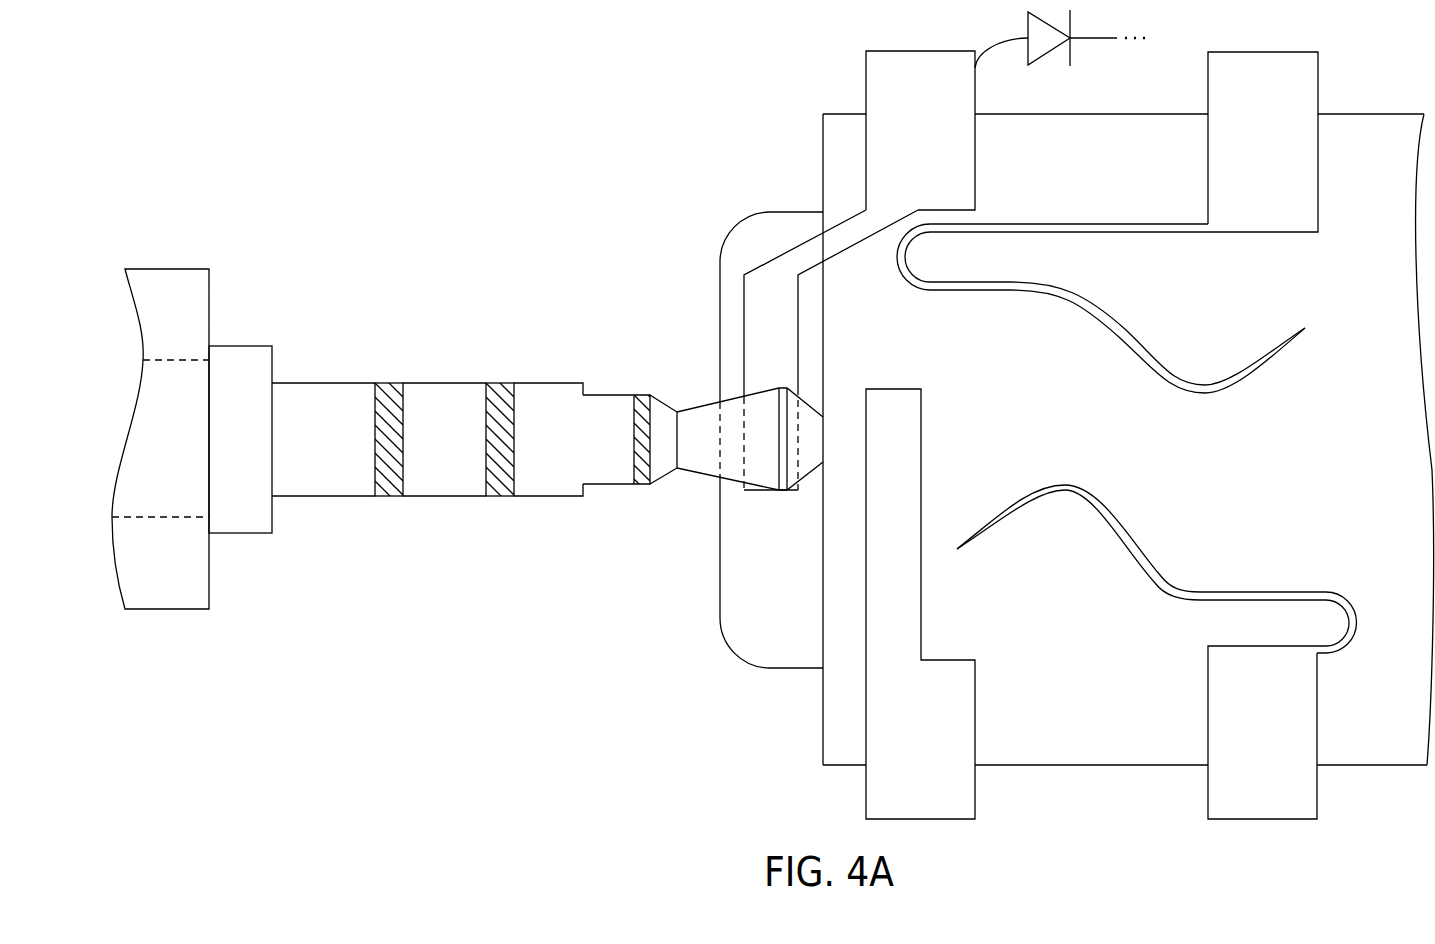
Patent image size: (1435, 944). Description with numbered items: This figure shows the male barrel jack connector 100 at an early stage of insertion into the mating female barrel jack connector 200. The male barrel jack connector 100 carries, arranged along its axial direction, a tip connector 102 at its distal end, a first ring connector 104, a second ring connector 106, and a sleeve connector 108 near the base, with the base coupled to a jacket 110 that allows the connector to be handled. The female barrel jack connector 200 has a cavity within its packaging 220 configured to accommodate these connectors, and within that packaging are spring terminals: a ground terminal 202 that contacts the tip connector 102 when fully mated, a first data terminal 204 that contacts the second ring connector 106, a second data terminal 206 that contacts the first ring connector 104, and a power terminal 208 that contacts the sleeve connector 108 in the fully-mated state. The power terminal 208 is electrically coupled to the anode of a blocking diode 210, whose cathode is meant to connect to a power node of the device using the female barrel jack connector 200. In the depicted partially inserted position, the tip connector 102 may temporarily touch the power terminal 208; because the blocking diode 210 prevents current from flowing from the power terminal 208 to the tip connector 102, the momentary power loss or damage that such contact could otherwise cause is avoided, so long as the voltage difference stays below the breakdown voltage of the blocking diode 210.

The male barrel jack connector 100 is at (395, 171).
The tip connector 102 is at (703, 477).
The first ring connector 104 is at (605, 395).
The second ring connector 106 is at (433, 383).
The sleeve connector 108 is at (290, 497).
The jacket 110 is at (190, 611).
The female barrel jack connector 200 is at (725, 171).
The ground terminal 202 is at (1271, 352).
The first data terminal 204 is at (948, 660).
The second data terminal 206 is at (1330, 592).
The power terminal 208 is at (975, 148).
The blocking diode 210 is at (1050, 52).
The packaging 220 is at (1390, 114).